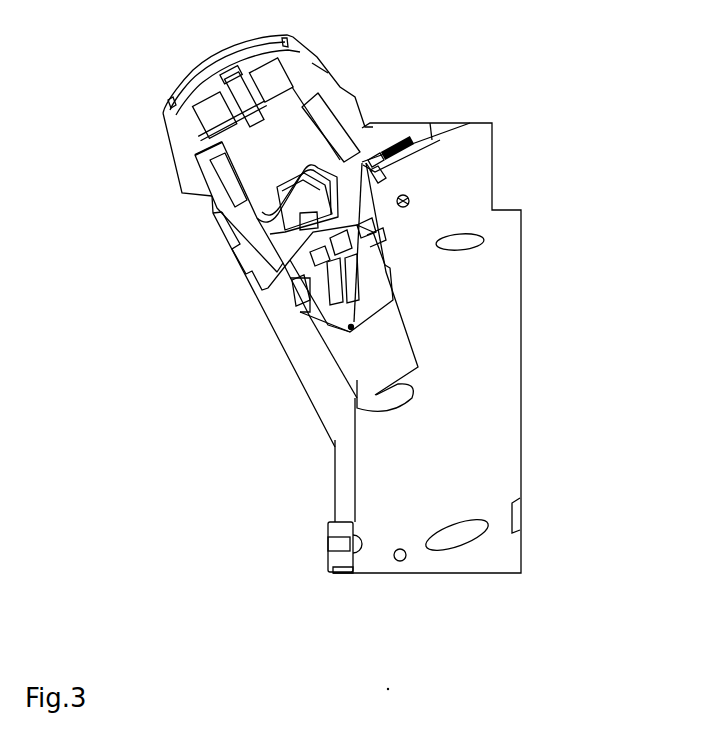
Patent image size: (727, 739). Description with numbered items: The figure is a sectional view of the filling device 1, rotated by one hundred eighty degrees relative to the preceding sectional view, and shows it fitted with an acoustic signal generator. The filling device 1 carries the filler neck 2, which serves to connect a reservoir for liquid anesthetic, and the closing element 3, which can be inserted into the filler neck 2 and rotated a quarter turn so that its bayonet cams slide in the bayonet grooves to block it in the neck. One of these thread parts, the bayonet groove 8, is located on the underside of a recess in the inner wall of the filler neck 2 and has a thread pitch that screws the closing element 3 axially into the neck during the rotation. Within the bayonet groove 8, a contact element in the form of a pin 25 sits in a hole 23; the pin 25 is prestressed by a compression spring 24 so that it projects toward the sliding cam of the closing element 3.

The filling device 1 is at (236, 360).
The filler neck 2 is at (216, 211).
The closing element 3 is at (312, 72).
The bayonet groove 8 is at (380, 148).
The hole 23 is at (380, 168).
The compression spring 24 is at (393, 153).
The pin 25 is at (380, 165).